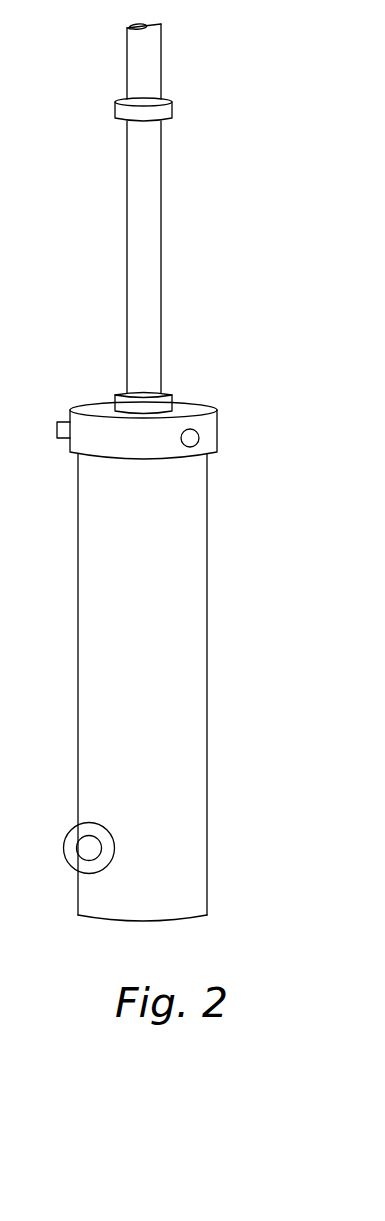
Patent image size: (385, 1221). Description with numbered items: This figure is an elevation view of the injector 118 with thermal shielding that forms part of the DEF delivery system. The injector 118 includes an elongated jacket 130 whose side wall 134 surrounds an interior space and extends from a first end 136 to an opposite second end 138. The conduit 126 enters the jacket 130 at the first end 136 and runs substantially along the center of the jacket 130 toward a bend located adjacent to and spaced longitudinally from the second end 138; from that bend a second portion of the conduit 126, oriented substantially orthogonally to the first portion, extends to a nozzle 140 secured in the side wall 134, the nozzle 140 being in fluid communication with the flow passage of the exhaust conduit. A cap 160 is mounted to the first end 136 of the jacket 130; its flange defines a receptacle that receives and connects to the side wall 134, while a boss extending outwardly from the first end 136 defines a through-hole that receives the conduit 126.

The injector 118 is at (202, 482).
The conduit 126 is at (163, 213).
The cap 160 is at (217, 400).
The first end 136 is at (72, 457).
The side wall 134 is at (167, 560).
The jacket 130 is at (173, 697).
The second end 138 is at (207, 912).
The nozzle 140 is at (64, 841).